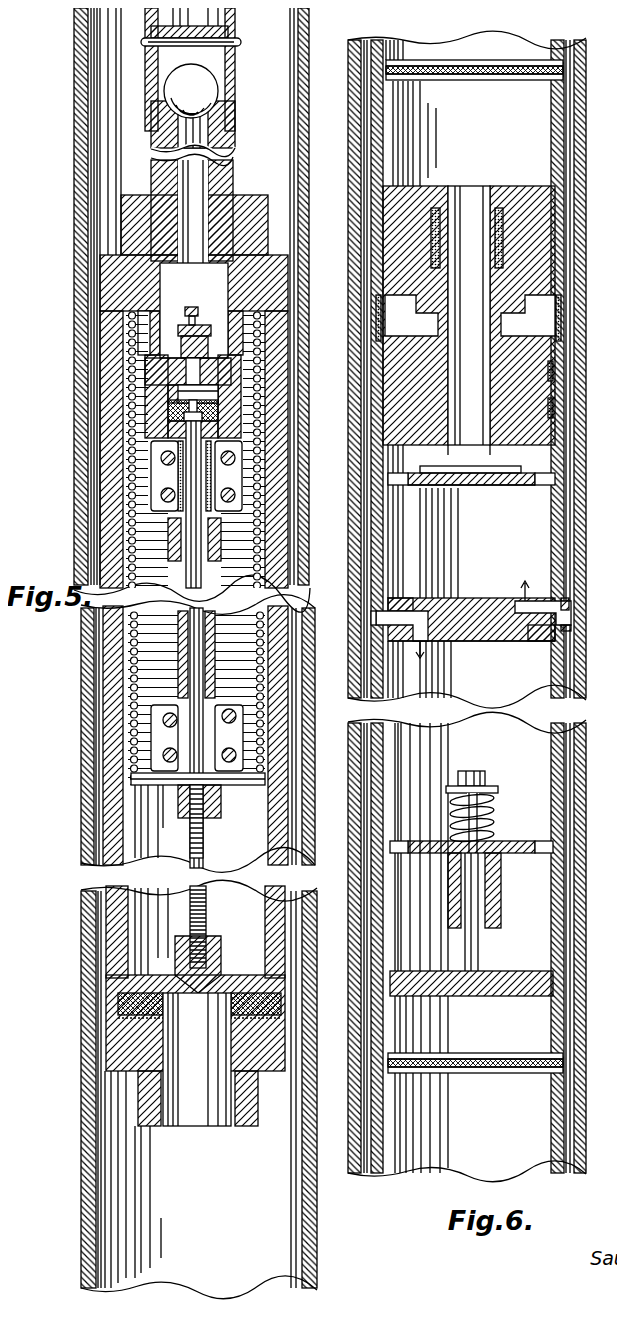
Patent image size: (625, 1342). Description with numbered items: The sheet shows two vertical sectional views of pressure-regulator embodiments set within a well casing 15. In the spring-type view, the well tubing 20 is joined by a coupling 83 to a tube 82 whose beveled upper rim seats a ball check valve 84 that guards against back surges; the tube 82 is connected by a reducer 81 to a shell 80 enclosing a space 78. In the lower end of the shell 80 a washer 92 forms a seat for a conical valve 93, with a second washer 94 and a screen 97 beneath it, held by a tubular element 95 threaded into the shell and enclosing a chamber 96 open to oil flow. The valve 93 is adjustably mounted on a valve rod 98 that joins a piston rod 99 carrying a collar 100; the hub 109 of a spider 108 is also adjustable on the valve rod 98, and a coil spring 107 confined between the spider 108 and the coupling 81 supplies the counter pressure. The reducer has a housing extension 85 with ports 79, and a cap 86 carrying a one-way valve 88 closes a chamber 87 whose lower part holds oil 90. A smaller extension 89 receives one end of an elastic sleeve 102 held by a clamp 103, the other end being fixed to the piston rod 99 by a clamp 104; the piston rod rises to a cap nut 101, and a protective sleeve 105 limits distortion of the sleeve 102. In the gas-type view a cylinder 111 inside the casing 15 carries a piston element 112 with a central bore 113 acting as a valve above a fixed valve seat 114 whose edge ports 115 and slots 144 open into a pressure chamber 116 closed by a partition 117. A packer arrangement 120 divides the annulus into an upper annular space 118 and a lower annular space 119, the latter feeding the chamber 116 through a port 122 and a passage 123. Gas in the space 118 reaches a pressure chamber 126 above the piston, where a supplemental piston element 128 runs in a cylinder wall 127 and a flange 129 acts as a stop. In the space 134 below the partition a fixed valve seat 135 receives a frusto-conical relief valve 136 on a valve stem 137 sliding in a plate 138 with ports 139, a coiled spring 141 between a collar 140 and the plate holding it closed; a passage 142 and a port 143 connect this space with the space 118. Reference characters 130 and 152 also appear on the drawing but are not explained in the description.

In FIG. 5, the well casing 15 is at (299, 92).
In FIG. 6, the well casing 15 is at (578, 96).
In FIG. 5, the well tubing 20 is at (222, 8).
In FIG. 5, the chamber or space 78 is at (252, 884).
In FIG. 5, the ports 79 is at (140, 320).
In FIG. 5, the shell 80 is at (225, 392).
In FIG. 5, the reducer 81 is at (250, 219).
In FIG. 5, the tube 82 is at (209, 172).
In FIG. 5, the coupling 83 is at (228, 76).
In FIG. 5, the ball check valve 84 is at (228, 101).
In FIG. 5, the housing extension 85 is at (230, 371).
In FIG. 5, the cap 86 is at (142, 363).
In FIG. 5, the chamber 87 is at (160, 392).
In FIG. 5, the one way valve 88 is at (197, 324).
In FIG. 5, the extension 89 is at (235, 466).
In FIG. 5, the oil 90 is at (172, 408).
In FIG. 5, the washer 92 is at (214, 952).
In FIG. 5, the conical valve 93 is at (203, 925).
In FIG. 5, the second washer 94 is at (113, 993).
In FIG. 5, the tubular element 95 is at (143, 1102).
In FIG. 5, the chamber 96 is at (200, 1100).
In FIG. 5, the screen 97 is at (181, 1012).
In FIG. 5, the valve rod 98 is at (238, 858).
In FIG. 5, the piston rod 99 is at (187, 722).
In FIG. 5, the collar 100 is at (228, 780).
In FIG. 5, the cap nut 101 is at (227, 405).
In FIG. 5, the elastic sleeve 102 is at (258, 516).
In FIG. 5, the clamp 103 is at (225, 478).
In FIG. 5, the clamp 104 is at (228, 728).
In FIG. 5, the protective sleeve 105 is at (236, 590).
In FIG. 5, the coil spring 107 is at (238, 664).
In FIG. 5, the spider 108 is at (228, 783).
In FIG. 5, the hub 109 is at (170, 795).
In FIG. 6, the cylinder 111 is at (551, 128).
In FIG. 6, the piston element 112 is at (524, 388).
In FIG. 6, the central bore 113 is at (467, 425).
In FIG. 6, the fixed valve seat 114 is at (458, 480).
In FIG. 6, the ports 115 is at (393, 478).
In FIG. 6, the pressure chamber 116 is at (519, 558).
In FIG. 6, the partition 117 is at (474, 600).
In FIG. 6, the upper annular space 118 is at (561, 172).
In FIG. 6, the lower annular space 119 is at (566, 673).
In FIG. 6, the packer arrangement 120 is at (364, 620).
In FIG. 6, the port 122 is at (541, 632).
In FIG. 6, the passage 123 is at (500, 633).
In FIG. 6, the pressure chamber 126 is at (527, 313).
In FIG. 6, the cylinder wall 127 is at (526, 238).
In FIG. 6, the supplemental piston element 128 is at (488, 184).
In FIG. 6, the flange 129 is at (504, 296).
In FIG. 6, the thread 130 is at (368, 310).
In FIG. 6, the space 134 is at (490, 689).
In FIG. 6, the fixed valve seat 135 is at (537, 967).
In FIG. 6, the relief valve 136 is at (485, 979).
In FIG. 6, the valve stem 137 is at (473, 937).
In FIG. 6, the plate 138 is at (488, 838).
In FIG. 6, the ports 139 is at (531, 845).
In FIG. 6, the collar 140 is at (478, 776).
In FIG. 6, the coiled spring 141 is at (488, 800).
In FIG. 6, the passage 142 is at (423, 632).
In FIG. 6, the port 143 is at (394, 597).
In FIG. 6, the slots 144 is at (420, 477).
In FIG. 6, the port 152 is at (563, 621).